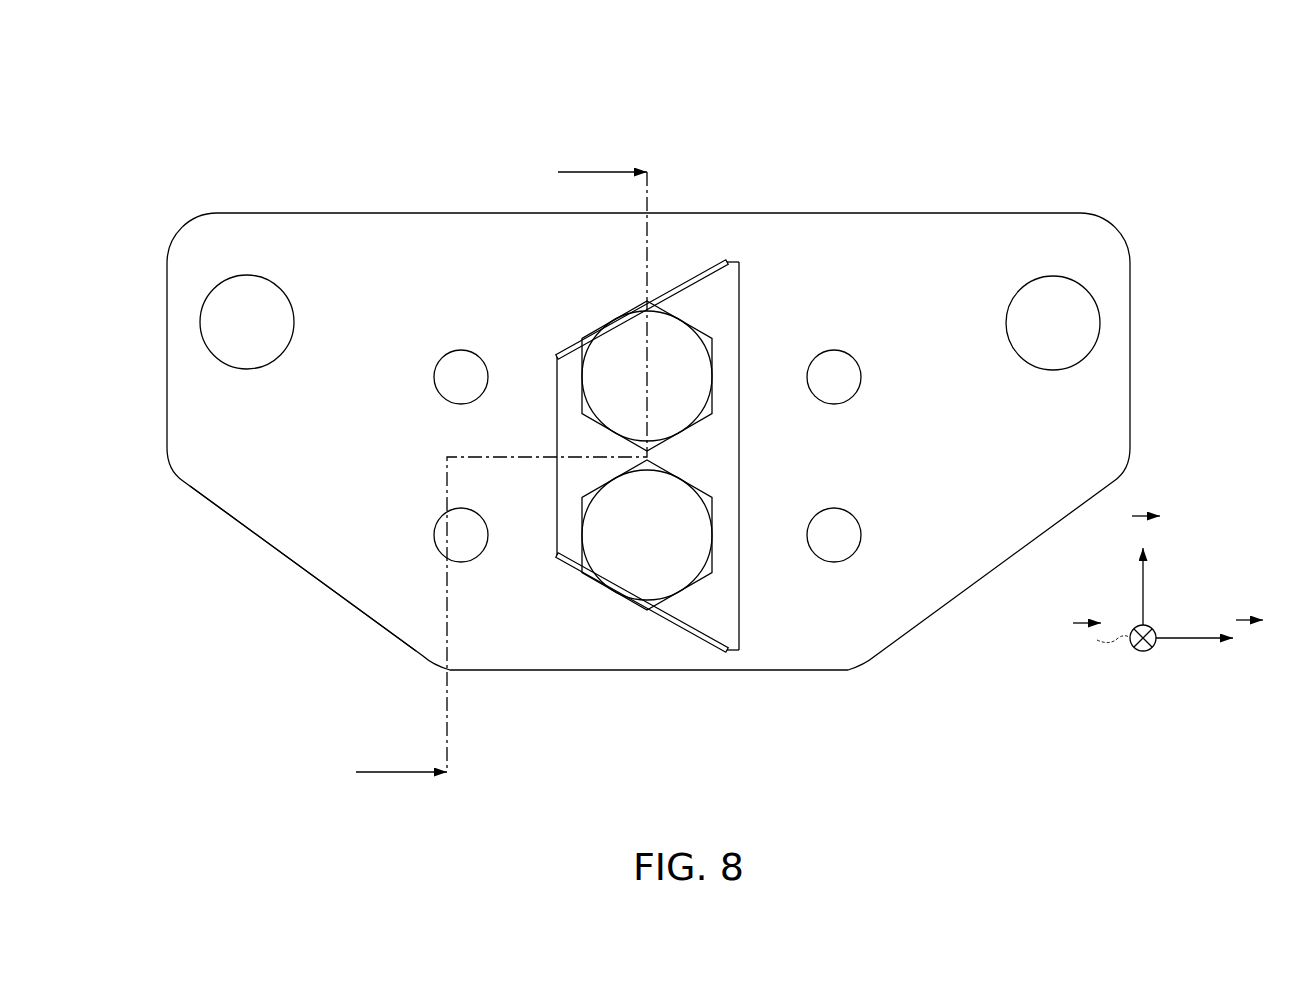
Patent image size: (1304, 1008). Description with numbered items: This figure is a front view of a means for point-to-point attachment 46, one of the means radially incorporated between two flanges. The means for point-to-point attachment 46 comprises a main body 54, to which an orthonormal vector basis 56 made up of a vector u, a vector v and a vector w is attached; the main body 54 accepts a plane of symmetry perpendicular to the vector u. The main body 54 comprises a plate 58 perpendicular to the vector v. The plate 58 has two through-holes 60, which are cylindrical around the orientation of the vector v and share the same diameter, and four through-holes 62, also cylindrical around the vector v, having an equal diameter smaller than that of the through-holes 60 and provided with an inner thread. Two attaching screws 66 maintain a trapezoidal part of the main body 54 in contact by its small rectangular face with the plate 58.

The means for point-to-point attachment 46 is at (1172, 90).
The main body 54 is at (777, 196).
The orthonormal vector basis 56 is at (1149, 670).
The plate 58 is at (248, 480).
The through-holes 60 is at (218, 293).
The through-holes 62 is at (452, 360).
The attaching screws 66 is at (676, 395).